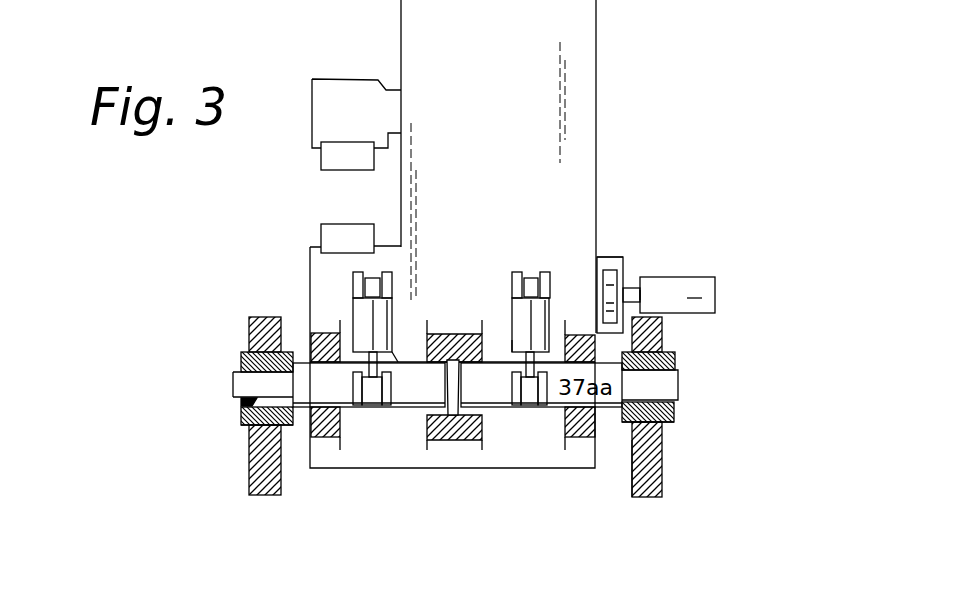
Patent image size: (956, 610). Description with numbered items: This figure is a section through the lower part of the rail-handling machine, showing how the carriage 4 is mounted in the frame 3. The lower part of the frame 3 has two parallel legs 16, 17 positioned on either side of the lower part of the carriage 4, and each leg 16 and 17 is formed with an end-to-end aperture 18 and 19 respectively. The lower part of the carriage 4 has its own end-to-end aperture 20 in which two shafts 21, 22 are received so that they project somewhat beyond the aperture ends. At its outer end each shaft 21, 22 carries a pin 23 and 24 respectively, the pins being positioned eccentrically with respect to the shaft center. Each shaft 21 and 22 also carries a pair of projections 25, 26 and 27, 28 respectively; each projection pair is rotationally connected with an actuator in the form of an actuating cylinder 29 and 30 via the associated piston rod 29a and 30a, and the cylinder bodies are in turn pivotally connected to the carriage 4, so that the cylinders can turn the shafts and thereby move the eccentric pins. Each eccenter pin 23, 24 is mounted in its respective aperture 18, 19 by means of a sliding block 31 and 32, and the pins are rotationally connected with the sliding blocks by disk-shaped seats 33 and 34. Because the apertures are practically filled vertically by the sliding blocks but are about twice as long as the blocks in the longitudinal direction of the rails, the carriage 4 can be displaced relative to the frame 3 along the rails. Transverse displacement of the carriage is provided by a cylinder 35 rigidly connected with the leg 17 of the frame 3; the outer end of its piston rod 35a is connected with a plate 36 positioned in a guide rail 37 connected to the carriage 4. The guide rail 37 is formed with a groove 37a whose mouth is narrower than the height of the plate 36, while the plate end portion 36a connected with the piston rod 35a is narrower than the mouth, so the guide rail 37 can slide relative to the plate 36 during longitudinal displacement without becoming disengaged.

The frame 3 is at (250, 480).
The carriage 4 is at (410, 39).
The leg 16 is at (268, 315).
The leg 17 is at (665, 480).
The aperture 18 is at (292, 350).
The aperture 19 is at (648, 422).
The aperture 20 is at (450, 416).
The shaft 21 is at (467, 332).
The shaft 22 is at (305, 410).
The pin 23 is at (667, 387).
The pin 24 is at (243, 377).
The projection 25 is at (512, 406).
The projection 26 is at (545, 406).
The projection 27 is at (358, 406).
The projection 28 is at (386, 406).
The actuating cylinder 29 is at (517, 272).
The piston rod 29a is at (525, 313).
The actuating cylinder 30 is at (363, 318).
The piston rod 30a is at (397, 362).
The sliding block 31 is at (667, 352).
The sliding block 32 is at (238, 418).
The disk-shaped seat 33 is at (675, 362).
The disk-shaped seat 34 is at (250, 402).
The cylinder 35 is at (693, 287).
The piston rod 35a is at (631, 292).
The plate 36 is at (597, 290).
The plate end portion 36a is at (604, 300).
The guide rail 37 is at (610, 263).
The groove 37a is at (628, 285).